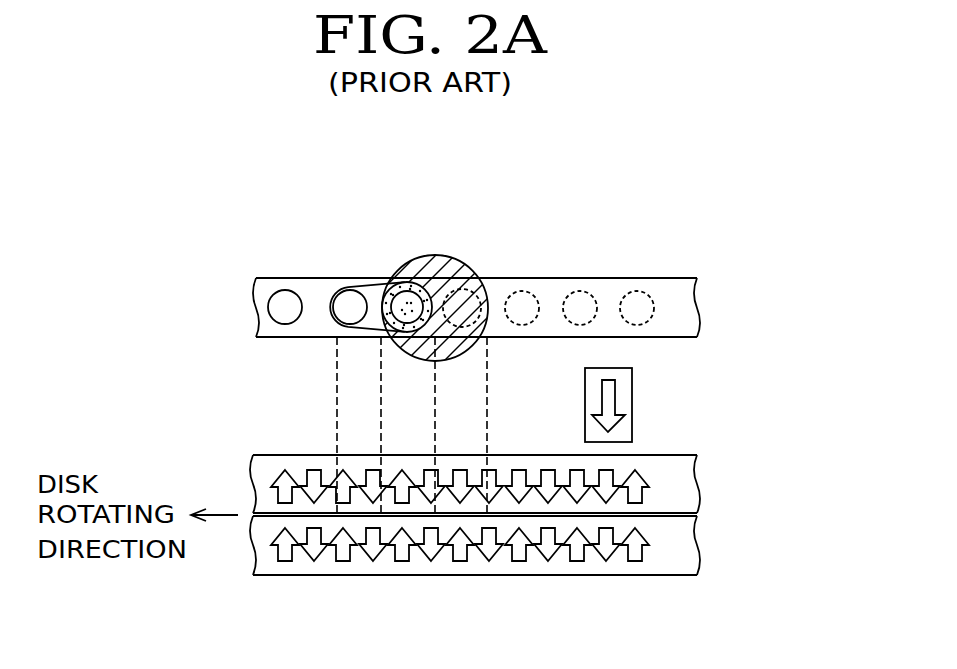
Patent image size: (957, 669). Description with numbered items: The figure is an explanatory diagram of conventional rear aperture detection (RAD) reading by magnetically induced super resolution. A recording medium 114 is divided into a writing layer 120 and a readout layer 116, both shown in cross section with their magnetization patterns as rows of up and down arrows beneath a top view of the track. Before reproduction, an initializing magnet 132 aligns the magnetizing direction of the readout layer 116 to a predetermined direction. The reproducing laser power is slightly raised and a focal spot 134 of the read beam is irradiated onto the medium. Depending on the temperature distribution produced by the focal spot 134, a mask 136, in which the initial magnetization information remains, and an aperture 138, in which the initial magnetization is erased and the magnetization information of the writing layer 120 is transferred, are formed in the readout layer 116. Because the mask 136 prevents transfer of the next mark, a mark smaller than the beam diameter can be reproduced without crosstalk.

The recording medium 114 is at (680, 313).
The readout layer 116 is at (680, 493).
The writing layer 120 is at (680, 550).
The initializing magnet 132 is at (632, 405).
The focal spot 134 is at (444, 253).
The mask 136 is at (447, 303).
The aperture 138 is at (397, 279).